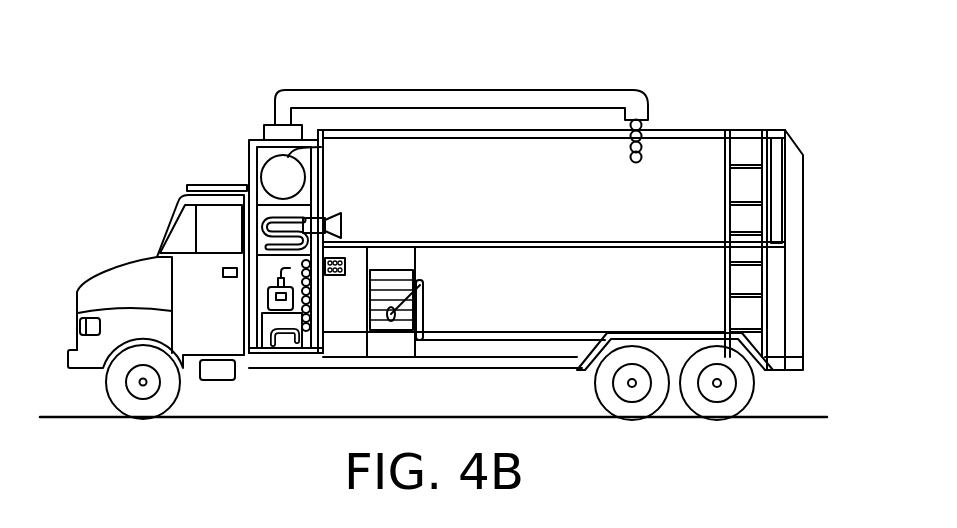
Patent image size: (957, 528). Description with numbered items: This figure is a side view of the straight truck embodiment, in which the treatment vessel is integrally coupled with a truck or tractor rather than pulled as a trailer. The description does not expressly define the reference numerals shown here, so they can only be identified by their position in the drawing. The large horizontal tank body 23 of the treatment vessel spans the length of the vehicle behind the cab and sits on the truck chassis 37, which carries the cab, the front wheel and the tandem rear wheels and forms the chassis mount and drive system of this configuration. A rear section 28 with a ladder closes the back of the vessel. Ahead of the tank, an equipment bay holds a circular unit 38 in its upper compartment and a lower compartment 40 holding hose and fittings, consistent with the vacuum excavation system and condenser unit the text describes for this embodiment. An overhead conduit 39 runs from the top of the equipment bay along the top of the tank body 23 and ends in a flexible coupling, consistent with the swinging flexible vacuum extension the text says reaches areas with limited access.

The tank 23 is at (688, 131).
The rear compartment 28 is at (797, 207).
The truck chassis 37 is at (490, 369).
The blower 38 is at (273, 177).
The conduit 39 is at (481, 88).
The hose storage box 40 is at (285, 346).